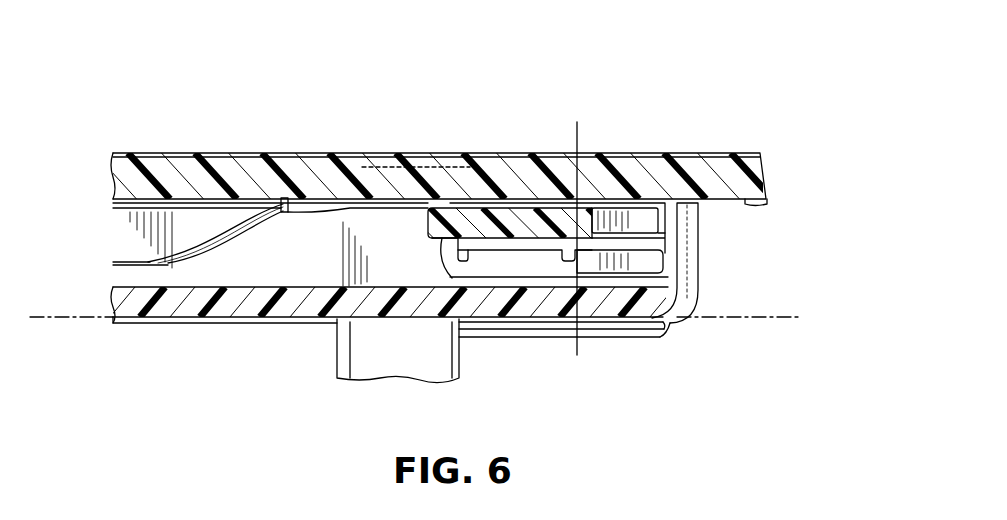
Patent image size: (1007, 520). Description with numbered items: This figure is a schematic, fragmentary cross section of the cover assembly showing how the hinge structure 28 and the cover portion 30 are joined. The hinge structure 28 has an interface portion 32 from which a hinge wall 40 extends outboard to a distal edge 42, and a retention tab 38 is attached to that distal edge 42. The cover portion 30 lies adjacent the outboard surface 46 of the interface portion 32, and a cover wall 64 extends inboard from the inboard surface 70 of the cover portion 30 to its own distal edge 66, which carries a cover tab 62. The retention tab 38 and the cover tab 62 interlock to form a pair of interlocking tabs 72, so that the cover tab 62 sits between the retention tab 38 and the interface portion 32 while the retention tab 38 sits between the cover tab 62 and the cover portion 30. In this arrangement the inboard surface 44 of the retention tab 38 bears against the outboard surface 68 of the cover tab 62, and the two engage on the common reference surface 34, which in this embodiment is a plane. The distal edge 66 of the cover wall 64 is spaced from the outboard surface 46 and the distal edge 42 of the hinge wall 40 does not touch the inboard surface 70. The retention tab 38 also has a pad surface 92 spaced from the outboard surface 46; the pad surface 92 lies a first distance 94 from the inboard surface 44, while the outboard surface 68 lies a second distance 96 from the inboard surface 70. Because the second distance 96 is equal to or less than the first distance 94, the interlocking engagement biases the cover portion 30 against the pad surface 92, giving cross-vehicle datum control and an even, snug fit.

The hinge structure 28 is at (157, 325).
The cover portion 30 is at (722, 156).
The interface portion 32 is at (673, 105).
The common reference surface 34 is at (768, 320).
The retention tabs 38 is at (507, 215).
The hinge walls 40 is at (372, 257).
The distal edge 42 is at (383, 199).
The inboard surface 44 is at (440, 282).
The outboard surface 46 is at (270, 287).
The cover tabs 62 is at (603, 250).
The cover walls 64 is at (676, 208).
The distal edge 66 is at (664, 300).
The outboard surface 68 is at (636, 232).
The inboard surface 70 is at (764, 204).
The pairs of interlocking tabs 72 is at (508, 252).
The pad surface 92 is at (440, 205).
The first distance 94 is at (577, 138).
The second distance 96 is at (688, 242).